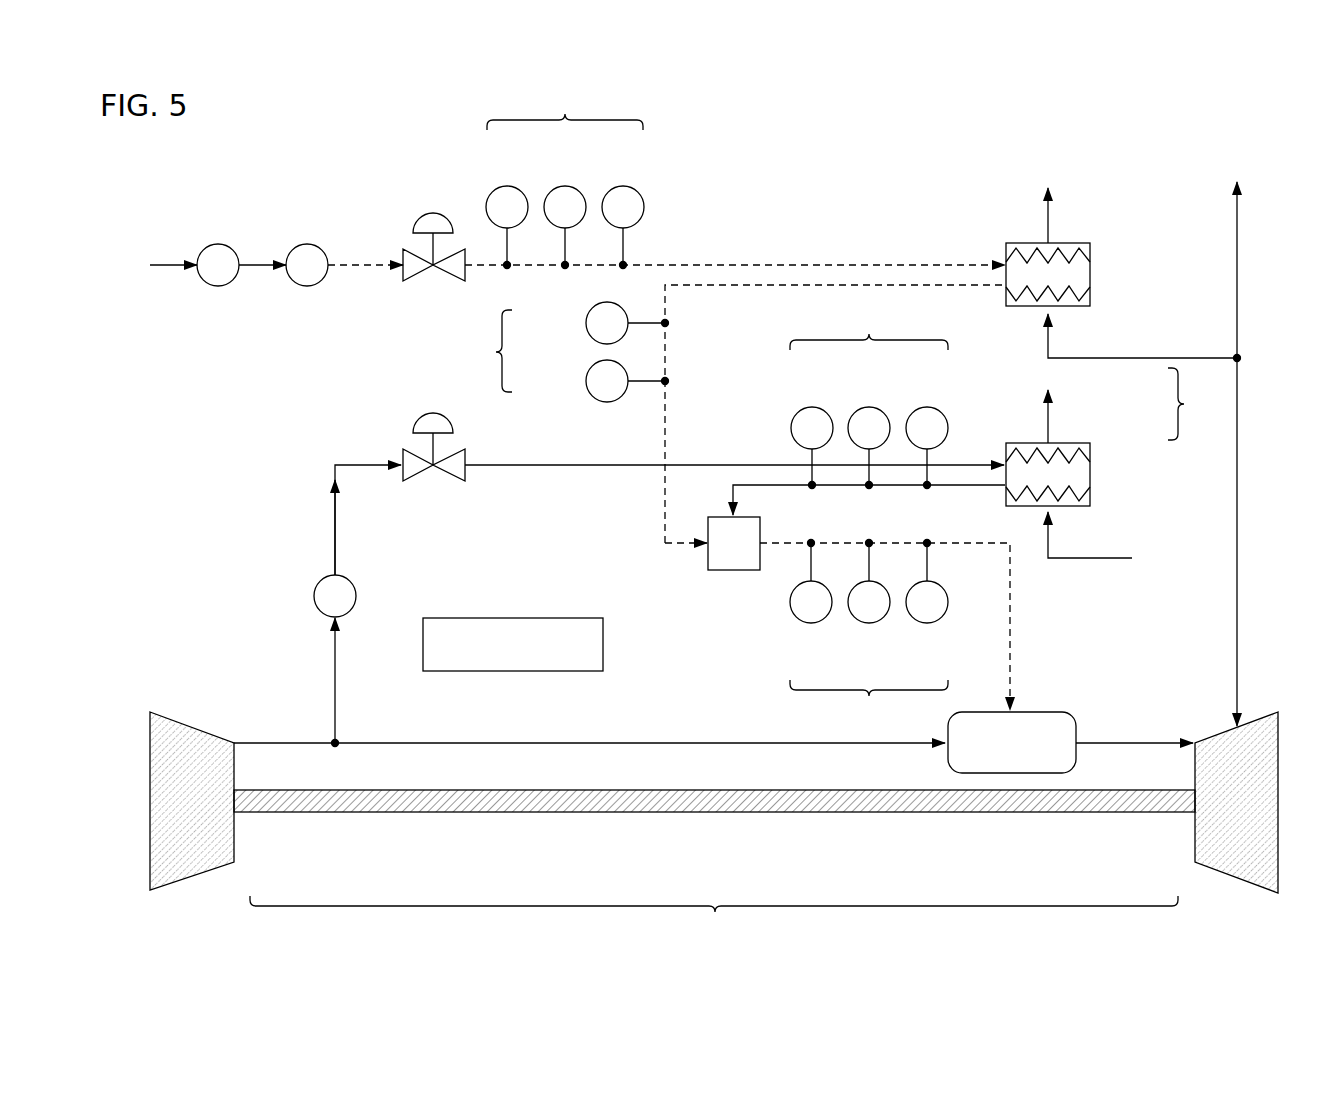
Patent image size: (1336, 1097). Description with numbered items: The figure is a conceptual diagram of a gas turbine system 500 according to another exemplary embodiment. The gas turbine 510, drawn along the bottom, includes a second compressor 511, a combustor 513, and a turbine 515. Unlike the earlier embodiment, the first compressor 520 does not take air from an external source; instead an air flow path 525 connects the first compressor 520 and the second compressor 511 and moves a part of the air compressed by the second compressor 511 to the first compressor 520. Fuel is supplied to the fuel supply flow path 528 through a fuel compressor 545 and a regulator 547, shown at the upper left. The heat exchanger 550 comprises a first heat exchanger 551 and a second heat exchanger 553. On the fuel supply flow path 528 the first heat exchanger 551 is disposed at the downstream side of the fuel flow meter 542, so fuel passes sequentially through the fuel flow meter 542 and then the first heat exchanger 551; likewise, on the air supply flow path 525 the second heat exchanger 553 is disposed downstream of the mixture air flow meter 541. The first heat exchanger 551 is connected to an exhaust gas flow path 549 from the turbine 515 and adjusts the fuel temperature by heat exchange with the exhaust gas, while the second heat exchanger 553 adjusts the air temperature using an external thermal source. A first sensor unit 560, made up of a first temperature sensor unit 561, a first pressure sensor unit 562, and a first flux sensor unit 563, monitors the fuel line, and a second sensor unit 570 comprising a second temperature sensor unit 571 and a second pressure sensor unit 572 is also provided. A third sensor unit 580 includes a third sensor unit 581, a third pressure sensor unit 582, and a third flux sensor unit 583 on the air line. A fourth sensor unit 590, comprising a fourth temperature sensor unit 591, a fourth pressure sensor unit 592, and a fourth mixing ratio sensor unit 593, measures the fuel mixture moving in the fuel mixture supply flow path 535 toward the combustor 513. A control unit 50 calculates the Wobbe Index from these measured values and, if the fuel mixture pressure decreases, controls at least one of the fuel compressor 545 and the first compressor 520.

The gas turbine system 500 is at (945, 147).
The control unit 50 is at (604, 645).
The gas turbine 510 is at (714, 921).
The second compressor 511 is at (234, 828).
The combustor 513 is at (1010, 773).
The turbine 515 is at (1195, 828).
The first compressor 520 is at (313, 596).
The air flow path 525 is at (751, 483).
The fuel supply flow path 528 is at (661, 432).
The fuel mixture supply flow path 535 is at (1013, 628).
The mixture air flow meter 541 is at (433, 481).
The fuel flow meter 542 is at (434, 212).
The fuel compressor 545 is at (219, 243).
The regulator 547 is at (308, 243).
The exhaust gas flow path 549 is at (1235, 618).
The heat exchanger 550 is at (1201, 404).
The first heat exchanger 551 is at (1068, 306).
The second heat exchanger 553 is at (1068, 443).
The first sensor unit 560 is at (565, 108).
The first temperature sensor unit 561 is at (624, 185).
The first pressure sensor unit 562 is at (566, 185).
The first flux sensor unit 563 is at (508, 185).
The second sensor unit 570 is at (479, 351).
The second temperature sensor unit 571 is at (584, 381).
The second pressure sensor unit 572 is at (584, 323).
The third sensor unit 580 is at (869, 326).
The third sensor unit 581 is at (928, 406).
The third pressure sensor unit 582 is at (870, 406).
The third flux sensor unit 583 is at (813, 406).
The fourth sensor unit 590 is at (869, 706).
The fourth temperature sensor unit 591 is at (927, 623).
The fourth pressure sensor unit 592 is at (869, 623).
The fourth mixing ratio sensor unit 593 is at (811, 623).